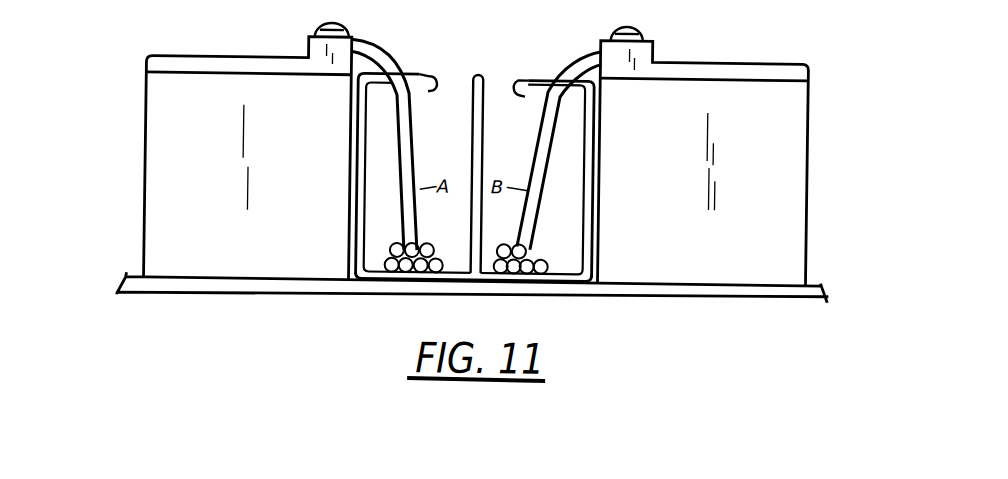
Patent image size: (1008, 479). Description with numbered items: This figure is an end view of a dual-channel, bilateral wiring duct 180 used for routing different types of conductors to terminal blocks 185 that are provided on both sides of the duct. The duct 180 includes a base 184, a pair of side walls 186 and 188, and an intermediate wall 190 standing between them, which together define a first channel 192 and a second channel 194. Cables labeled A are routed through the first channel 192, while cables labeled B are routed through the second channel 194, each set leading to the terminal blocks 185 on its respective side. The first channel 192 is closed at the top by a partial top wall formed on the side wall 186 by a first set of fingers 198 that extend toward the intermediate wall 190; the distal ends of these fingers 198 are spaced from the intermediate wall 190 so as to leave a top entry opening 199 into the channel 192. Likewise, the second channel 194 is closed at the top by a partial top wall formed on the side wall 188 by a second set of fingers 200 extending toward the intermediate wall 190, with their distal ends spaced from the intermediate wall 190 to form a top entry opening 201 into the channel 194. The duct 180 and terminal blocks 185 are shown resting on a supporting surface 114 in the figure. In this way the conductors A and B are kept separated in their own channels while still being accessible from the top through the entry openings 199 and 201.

The base plate 114 is at (670, 296).
The terminal blocks 185 is at (146, 160).
The base 184 is at (447, 277).
The side wall 186 is at (350, 188).
The side wall 188 is at (594, 204).
The intermediate wall 190 is at (491, 42).
The first channel 192 is at (458, 150).
The second channel 194 is at (532, 149).
The first set of fingers 198 is at (419, 73).
The second set of fingers 200 is at (547, 53).
The top entry opening 199 is at (462, 78).
The top entry opening 201 is at (495, 81).
The dual-channel, bilateral wiring duct 180 is at (512, 73).